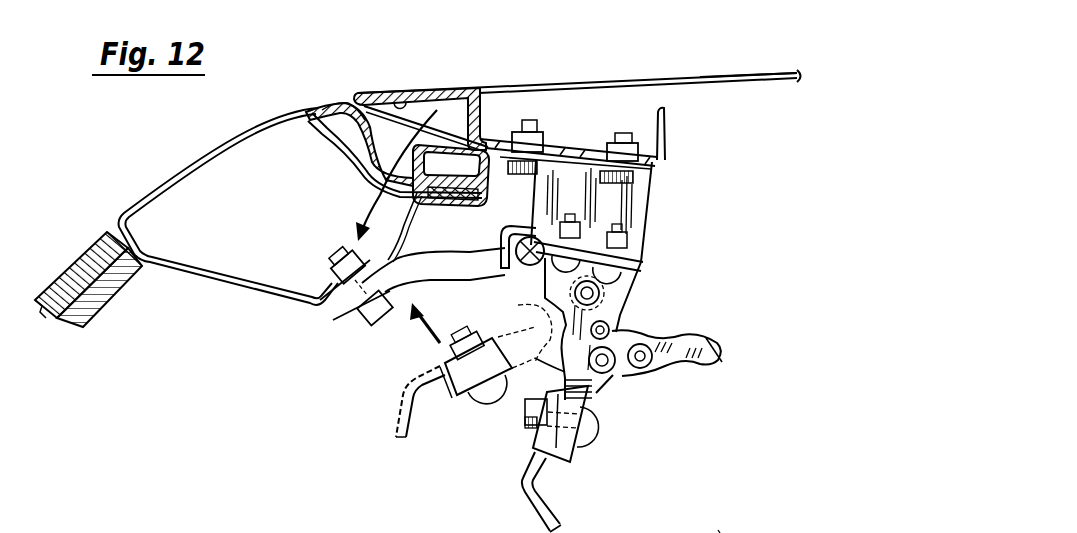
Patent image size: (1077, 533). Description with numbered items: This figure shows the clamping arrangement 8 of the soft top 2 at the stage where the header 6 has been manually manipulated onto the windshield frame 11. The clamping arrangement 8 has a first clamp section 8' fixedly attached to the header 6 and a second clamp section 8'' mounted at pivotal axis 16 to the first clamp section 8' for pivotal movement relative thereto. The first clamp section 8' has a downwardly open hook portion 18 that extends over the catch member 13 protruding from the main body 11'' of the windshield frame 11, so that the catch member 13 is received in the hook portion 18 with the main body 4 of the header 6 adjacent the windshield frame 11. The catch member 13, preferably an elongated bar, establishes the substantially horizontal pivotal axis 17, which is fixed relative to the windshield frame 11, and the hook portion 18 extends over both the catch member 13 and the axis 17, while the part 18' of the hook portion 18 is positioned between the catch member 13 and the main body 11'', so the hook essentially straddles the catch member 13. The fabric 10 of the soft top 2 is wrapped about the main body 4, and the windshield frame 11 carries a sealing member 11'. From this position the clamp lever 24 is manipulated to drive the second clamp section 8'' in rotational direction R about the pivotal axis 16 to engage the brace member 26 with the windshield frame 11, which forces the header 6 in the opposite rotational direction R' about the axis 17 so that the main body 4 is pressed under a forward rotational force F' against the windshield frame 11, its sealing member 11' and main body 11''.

The soft top 2 is at (712, 60).
The main body of the header 4 is at (447, 104).
The header 6 is at (580, 140).
The clamping arrangement 8 is at (655, 276).
The first clamp section 8' is at (611, 222).
The second clamp section 8'' is at (546, 392).
The fabric 10 is at (668, 73).
The windshield frame 11 is at (291, 213).
The sealing member 11' is at (359, 115).
The main body of the windshield frame 11'' is at (152, 263).
The catch member 13 is at (503, 285).
The pivotal axis 16 is at (600, 296).
The pivotal axis 17 is at (532, 272).
The hook portion 18 is at (517, 212).
The part of the hook portion 18' is at (478, 241).
The clamp lever 24 is at (720, 332).
The brace member 26 is at (402, 406).
The rotational direction R is at (415, 335).
The opposite rotational direction R' is at (363, 175).
The forward rotational force F' is at (719, 519).